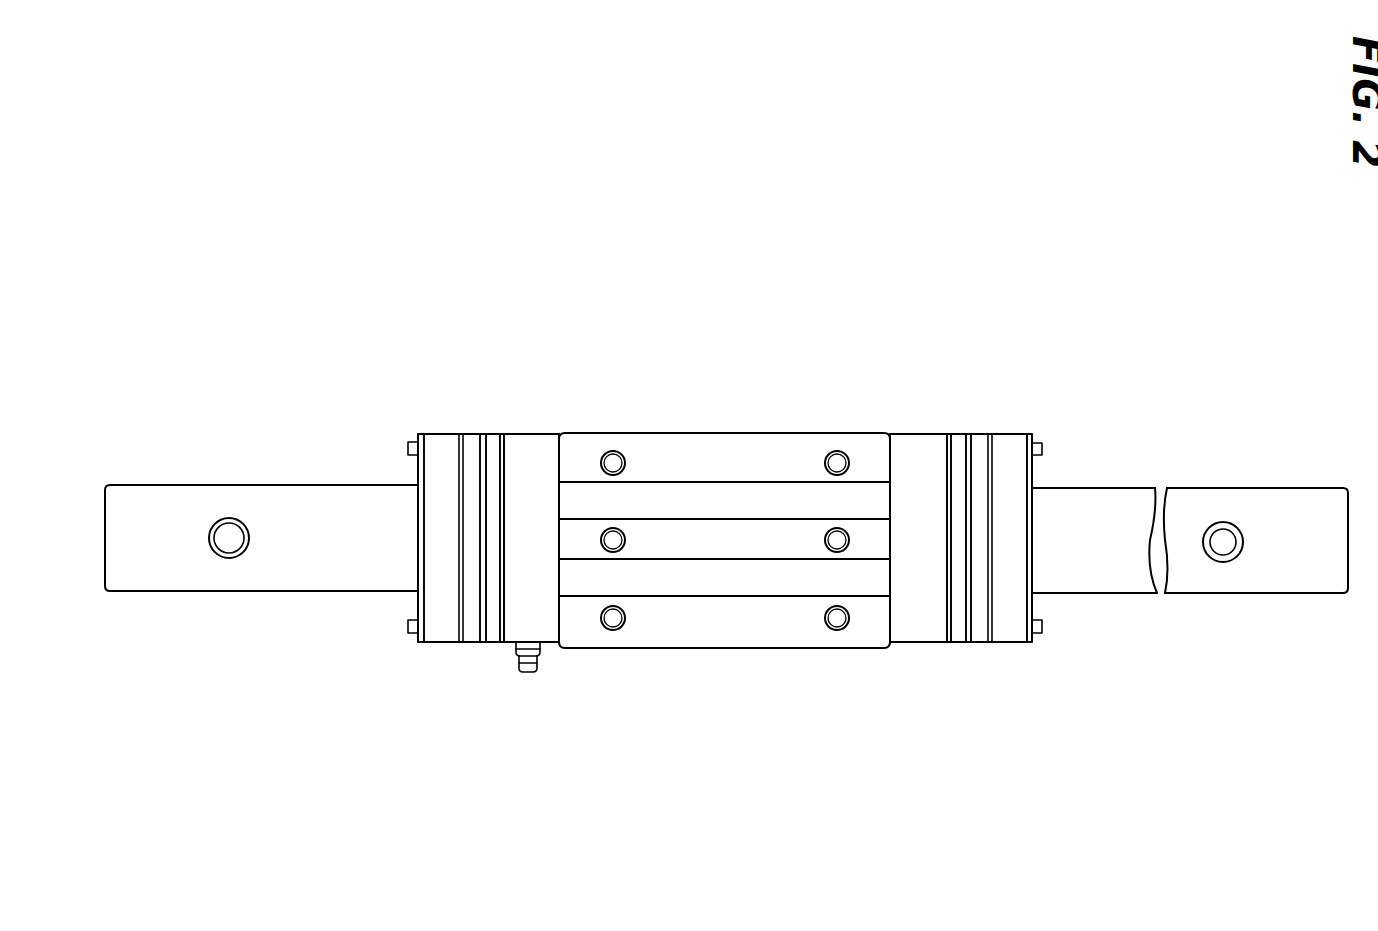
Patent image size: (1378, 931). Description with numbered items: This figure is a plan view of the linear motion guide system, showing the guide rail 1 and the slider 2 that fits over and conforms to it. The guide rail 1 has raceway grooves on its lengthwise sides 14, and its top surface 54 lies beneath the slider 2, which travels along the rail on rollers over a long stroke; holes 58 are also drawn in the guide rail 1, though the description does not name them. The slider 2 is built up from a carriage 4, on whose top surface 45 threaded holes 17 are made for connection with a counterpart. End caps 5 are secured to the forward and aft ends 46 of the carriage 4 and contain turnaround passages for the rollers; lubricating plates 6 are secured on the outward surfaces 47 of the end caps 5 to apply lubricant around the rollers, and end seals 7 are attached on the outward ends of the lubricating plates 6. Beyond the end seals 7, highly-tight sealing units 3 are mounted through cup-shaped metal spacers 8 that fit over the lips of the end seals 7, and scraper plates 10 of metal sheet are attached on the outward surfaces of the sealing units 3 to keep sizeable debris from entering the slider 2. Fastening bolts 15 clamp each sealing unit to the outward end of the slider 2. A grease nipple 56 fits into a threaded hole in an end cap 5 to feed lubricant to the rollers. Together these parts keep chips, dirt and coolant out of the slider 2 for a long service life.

The guide rail 1 is at (186, 515).
The slider 2 is at (724, 522).
The highly-tight sealing unit 3 is at (441, 450).
The carriage 4 is at (700, 455).
The end cap 5 is at (540, 462).
The lubricating plate 6 is at (493, 462).
The end seal 7 is at (484, 455).
The spacer 8 is at (472, 448).
The scraper plate 10 is at (418, 478).
The lengthwise side 14 is at (263, 485).
The fastening bolt 15 is at (410, 630).
The threaded hole 17 is at (612, 455).
The top surface 45 is at (775, 465).
The forward and aft end 46 is at (558, 580).
The outward surface 47 is at (503, 595).
The top surface 54 is at (318, 565).
The grease nipple 56 is at (527, 668).
The rail mounting hole 58 is at (228, 542).